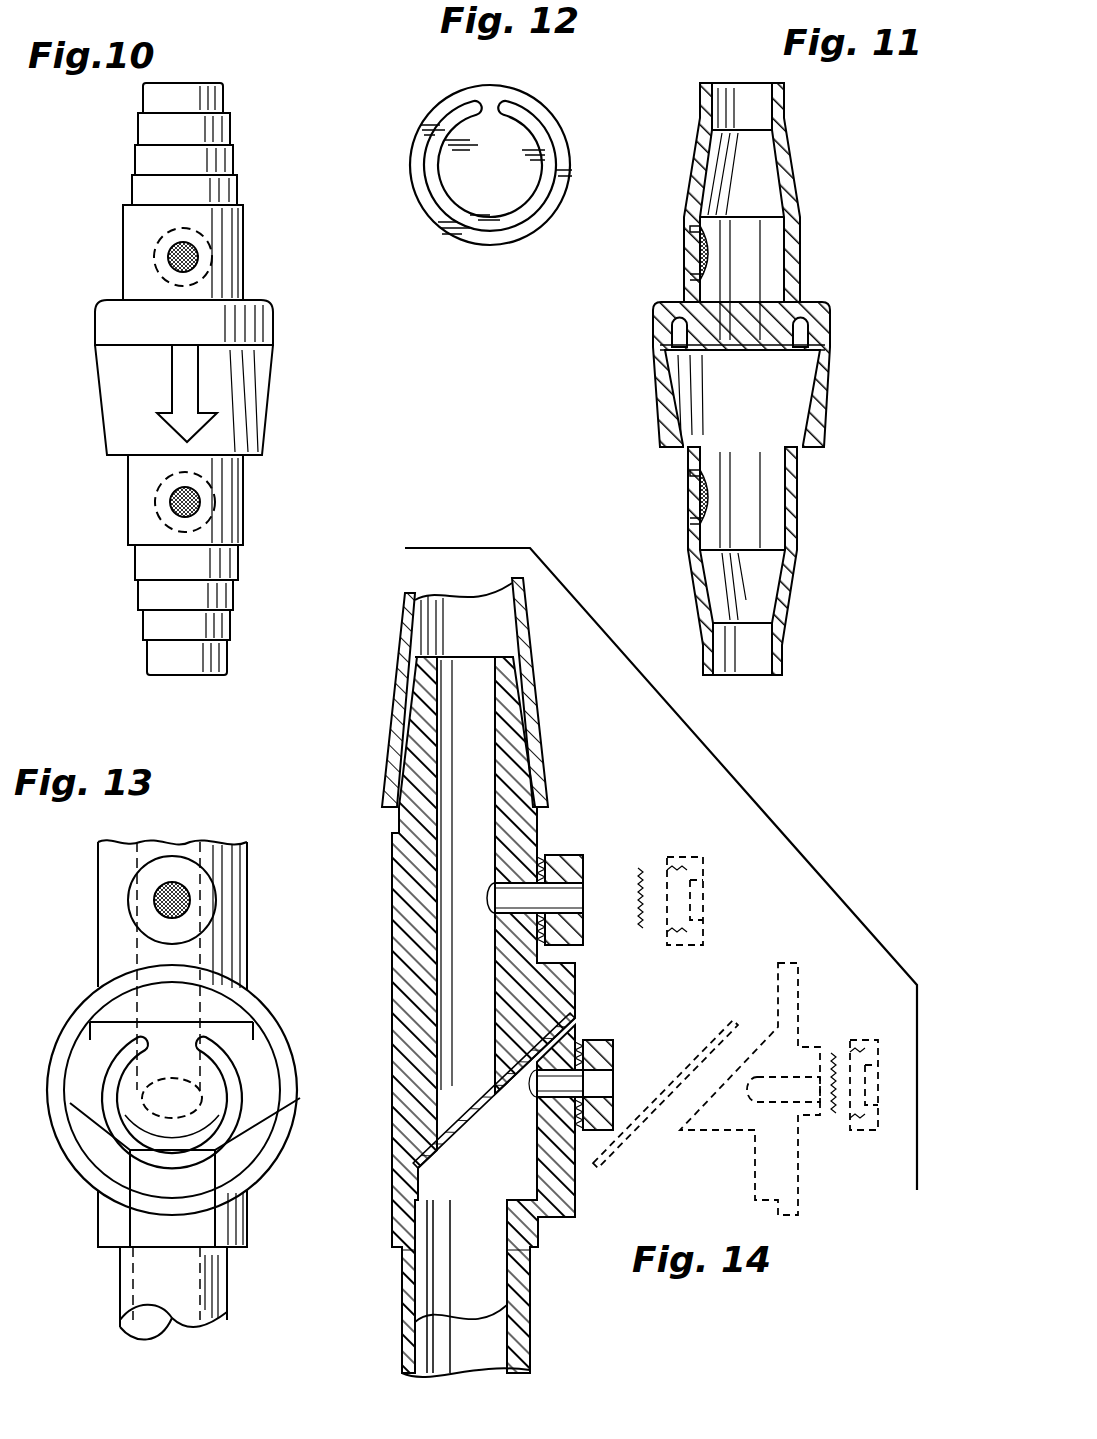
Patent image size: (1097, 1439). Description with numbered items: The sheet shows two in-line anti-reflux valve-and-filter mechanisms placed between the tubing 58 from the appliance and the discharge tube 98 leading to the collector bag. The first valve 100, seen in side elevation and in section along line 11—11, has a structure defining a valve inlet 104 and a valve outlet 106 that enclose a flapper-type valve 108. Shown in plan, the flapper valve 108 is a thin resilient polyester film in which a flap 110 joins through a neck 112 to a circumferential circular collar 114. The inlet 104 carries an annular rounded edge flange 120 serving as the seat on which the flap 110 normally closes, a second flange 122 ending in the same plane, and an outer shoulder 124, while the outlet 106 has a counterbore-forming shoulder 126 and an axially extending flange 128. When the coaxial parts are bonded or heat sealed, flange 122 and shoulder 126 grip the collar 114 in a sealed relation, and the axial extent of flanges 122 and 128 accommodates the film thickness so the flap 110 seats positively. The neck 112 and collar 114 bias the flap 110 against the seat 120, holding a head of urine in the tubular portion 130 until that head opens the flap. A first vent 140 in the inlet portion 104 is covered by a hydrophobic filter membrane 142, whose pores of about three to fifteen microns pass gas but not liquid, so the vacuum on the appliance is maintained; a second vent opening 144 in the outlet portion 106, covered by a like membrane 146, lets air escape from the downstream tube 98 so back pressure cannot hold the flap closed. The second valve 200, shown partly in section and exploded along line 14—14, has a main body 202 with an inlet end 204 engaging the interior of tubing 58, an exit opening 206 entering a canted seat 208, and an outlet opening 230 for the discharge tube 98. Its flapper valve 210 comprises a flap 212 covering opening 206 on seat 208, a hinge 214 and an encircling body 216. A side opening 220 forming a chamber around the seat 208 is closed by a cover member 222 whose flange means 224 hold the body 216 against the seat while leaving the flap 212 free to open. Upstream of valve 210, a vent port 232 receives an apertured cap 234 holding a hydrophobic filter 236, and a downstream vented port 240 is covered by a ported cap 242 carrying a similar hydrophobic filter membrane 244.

In FIG. 10, the section line 11— 11 is at (183, 33).
In FIG. 13, the section line 14— 14 is at (172, 795).
In FIG. 14, the tube 58 is at (405, 616).
In FIG. 14, the outlet tube 98 is at (532, 1330).
In FIG. 11, the valve 100 is at (635, 436).
In FIG. 11, the valve inlet 104 is at (800, 200).
In FIG. 11, the valve outlet 106 is at (797, 575).
In FIG. 12, the flapper valve 108 is at (556, 106).
In FIG. 11, the flapper valve 108 is at (750, 342).
In FIG. 12, the flap 110 is at (512, 191).
In FIG. 11, the flap 110 is at (735, 351).
In FIG. 12, the neck 112 is at (488, 106).
In FIG. 12, the circumferential circular collar 114 is at (423, 186).
In FIG. 11, the circumferential circular collar 114 is at (806, 351).
In FIG. 11, the rounded edge flange 120 is at (695, 351).
In FIG. 11, the second flange 122 is at (816, 336).
In FIG. 11, the shoulder 124 is at (659, 308).
In FIG. 11, the counterbore forming shoulder 126 is at (663, 355).
In FIG. 11, the axially extending flange 128 is at (653, 327).
In FIG. 11, the tubular portion 130 is at (780, 253).
In FIG. 10, the first vent 140 is at (168, 258).
In FIG. 11, the first vent 140 is at (690, 264).
In FIG. 10, the hydrophobic filter membrane 142 is at (150, 238).
In FIG. 11, the hydrophobic filter membrane 142 is at (712, 248).
In FIG. 10, the second vent opening 144 is at (172, 498).
In FIG. 11, the second vent opening 144 is at (690, 516).
In FIG. 10, the hydrophobic filter membrane 146 is at (155, 515).
In FIG. 11, the hydrophobic filter membrane 146 is at (712, 502).
In FIG. 14, the valve 200 is at (378, 943).
In FIG. 14, the main body 202 is at (392, 862).
In FIG. 14, the inlet end 204 is at (474, 657).
In FIG. 14, the exit opening 206 is at (466, 1068).
In FIG. 14, the canted seat 208 is at (392, 1098).
In FIG. 13, the flapper valve 210 is at (258, 1063).
In FIG. 14, the flapper valve 210 is at (440, 1153).
In FIG. 13, the flap 212 is at (203, 1112).
In FIG. 13, the hinge 214 is at (175, 1065).
In FIG. 13, the encircling body 216 is at (262, 1100).
In FIG. 14, the side opening 220 is at (520, 1200).
In FIG. 14, the cover member 222 is at (575, 1004).
In FIG. 14, the flange means 224 is at (498, 1128).
In FIG. 14, the outlet opening 230 is at (498, 1290).
In FIG. 14, the vent port 232 is at (490, 905).
In FIG. 14, the apertured cap 234 is at (565, 855).
In FIG. 14, the hydrophobic filter 236 is at (630, 895).
In FIG. 14, the downstream vented port 240 is at (600, 1083).
In FIG. 14, the ported cap 242 is at (588, 1040).
In FIG. 14, the hydrophobic filter membrane 244 is at (598, 1080).